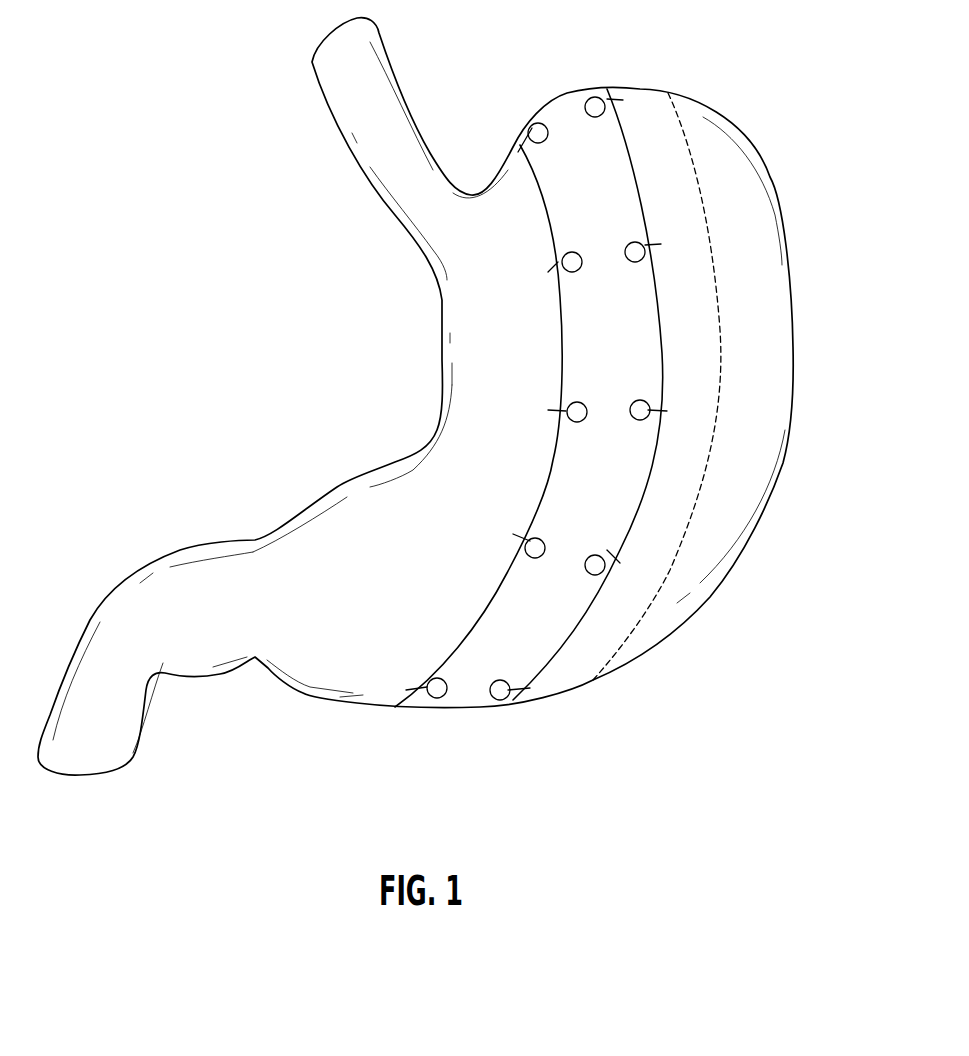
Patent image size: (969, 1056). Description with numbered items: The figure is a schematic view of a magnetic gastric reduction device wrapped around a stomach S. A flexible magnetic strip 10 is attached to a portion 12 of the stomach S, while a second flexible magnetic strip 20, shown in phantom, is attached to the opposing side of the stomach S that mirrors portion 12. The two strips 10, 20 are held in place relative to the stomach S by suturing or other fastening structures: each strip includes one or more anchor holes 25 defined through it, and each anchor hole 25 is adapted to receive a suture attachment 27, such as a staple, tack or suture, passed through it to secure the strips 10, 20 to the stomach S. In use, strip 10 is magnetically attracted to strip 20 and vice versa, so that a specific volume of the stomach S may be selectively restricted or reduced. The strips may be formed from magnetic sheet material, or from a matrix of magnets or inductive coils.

The flexible magnetic strip 10 is at (573, 318).
The portion of a stomach 12 is at (781, 283).
The second flexible magnetic strip 20 is at (668, 169).
The anchor hole 25 is at (595, 107).
The suture attachment 27 is at (528, 127).
The stomach S is at (719, 63).